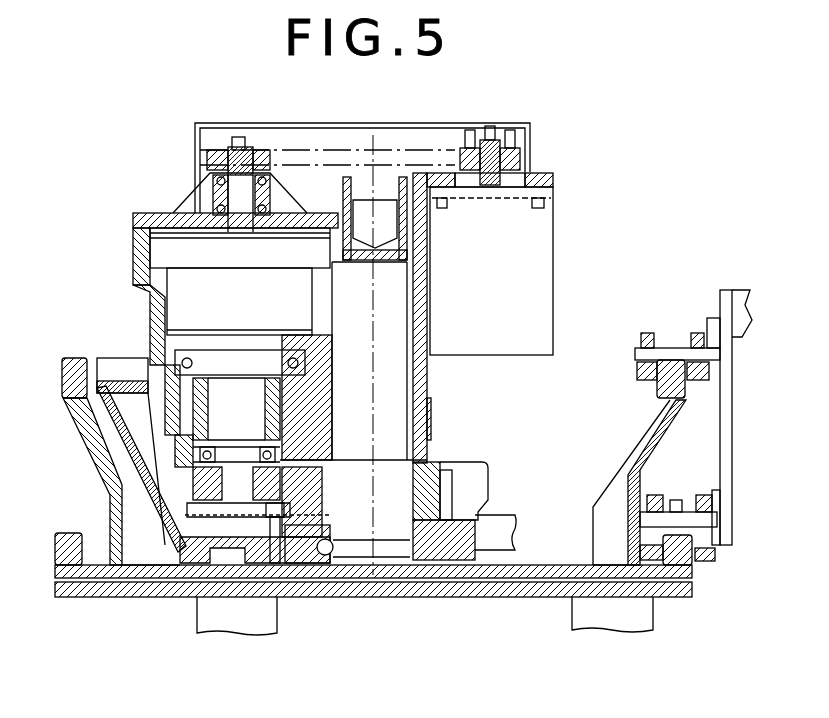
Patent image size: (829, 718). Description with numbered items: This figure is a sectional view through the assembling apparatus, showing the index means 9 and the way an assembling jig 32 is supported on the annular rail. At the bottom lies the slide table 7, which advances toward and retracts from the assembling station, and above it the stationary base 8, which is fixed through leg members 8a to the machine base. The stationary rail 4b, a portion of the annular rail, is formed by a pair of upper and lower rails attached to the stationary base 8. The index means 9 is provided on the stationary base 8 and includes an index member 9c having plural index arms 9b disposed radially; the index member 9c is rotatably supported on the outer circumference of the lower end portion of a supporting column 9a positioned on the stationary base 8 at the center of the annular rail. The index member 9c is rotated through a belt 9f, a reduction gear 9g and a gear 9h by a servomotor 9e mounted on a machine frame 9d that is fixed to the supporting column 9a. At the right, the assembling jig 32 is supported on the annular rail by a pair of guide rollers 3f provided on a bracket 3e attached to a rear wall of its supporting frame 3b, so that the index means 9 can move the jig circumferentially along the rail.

The index means 9 is at (166, 200).
The belt 9f is at (382, 152).
The reduction gear 9g is at (180, 298).
The machine frame 9d is at (424, 370).
The supporting column 9a is at (397, 420).
The servomotor 9e is at (547, 258).
The index arms 9b is at (120, 447).
The gear 9h is at (187, 505).
The index member 9c is at (263, 543).
The stationary rail 4b is at (72, 358).
The bracket 3e is at (710, 348).
The guide rollers 3f is at (676, 334).
The assembling jig 32 is at (722, 453).
The supporting frame 3b is at (722, 494).
The stationary base 8 is at (535, 578).
The slide table 7 is at (465, 590).
The leg members 8a is at (242, 620).